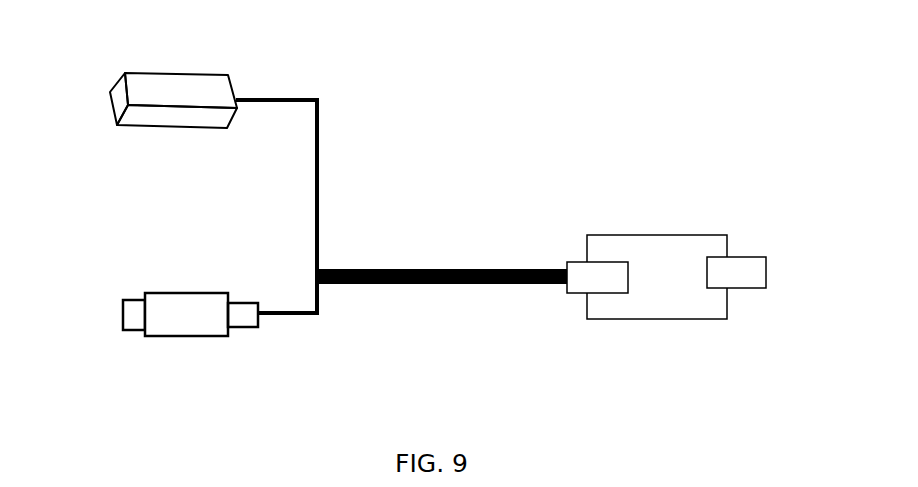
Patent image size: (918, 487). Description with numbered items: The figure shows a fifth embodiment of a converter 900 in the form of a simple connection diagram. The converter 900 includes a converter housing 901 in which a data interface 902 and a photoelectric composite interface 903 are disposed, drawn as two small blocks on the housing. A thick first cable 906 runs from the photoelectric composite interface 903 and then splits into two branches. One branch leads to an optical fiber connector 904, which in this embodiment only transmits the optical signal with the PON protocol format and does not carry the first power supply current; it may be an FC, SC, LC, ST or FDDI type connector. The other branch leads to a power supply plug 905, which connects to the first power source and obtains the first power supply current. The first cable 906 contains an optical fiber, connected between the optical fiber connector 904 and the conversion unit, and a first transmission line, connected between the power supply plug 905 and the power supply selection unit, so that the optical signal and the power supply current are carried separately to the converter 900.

The converter 900 is at (432, 80).
The converter housing 901 is at (657, 235).
The data interface 902 is at (733, 288).
The photoelectric composite interface 903 is at (598, 293).
The optical fiber connector 904 is at (178, 87).
The power supply plug 905 is at (137, 332).
The first cable 906 is at (465, 270).